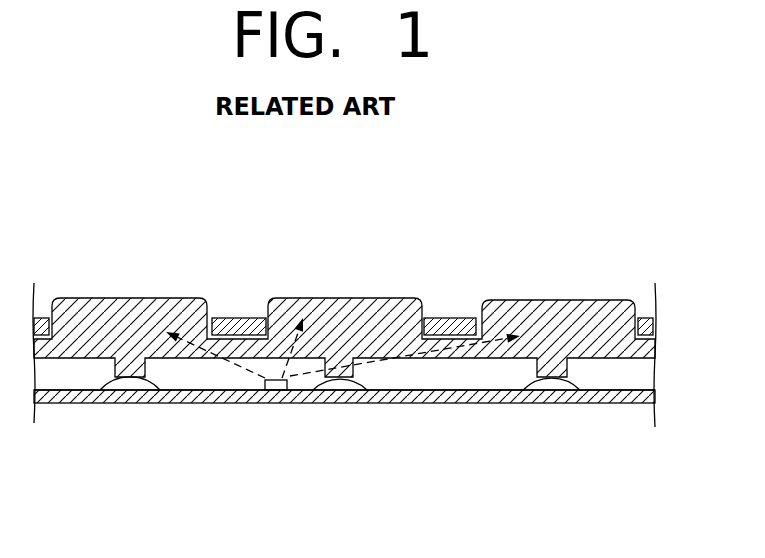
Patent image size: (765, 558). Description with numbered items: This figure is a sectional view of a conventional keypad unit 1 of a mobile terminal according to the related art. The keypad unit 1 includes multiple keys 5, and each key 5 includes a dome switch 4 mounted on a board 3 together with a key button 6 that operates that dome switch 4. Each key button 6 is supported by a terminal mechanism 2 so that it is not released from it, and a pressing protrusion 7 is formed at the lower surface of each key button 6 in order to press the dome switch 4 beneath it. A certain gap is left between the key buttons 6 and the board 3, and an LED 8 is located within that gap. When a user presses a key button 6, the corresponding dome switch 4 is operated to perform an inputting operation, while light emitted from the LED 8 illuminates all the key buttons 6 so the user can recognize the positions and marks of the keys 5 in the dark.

The keypad unit 1 is at (100, 240).
The terminal mechanism 2 is at (247, 320).
The board 3 is at (608, 398).
The dome switch 4 is at (555, 388).
The key 5 is at (624, 291).
The key button 6 is at (585, 312).
The pressing protrusion 7 is at (532, 382).
The LED 8 is at (273, 390).